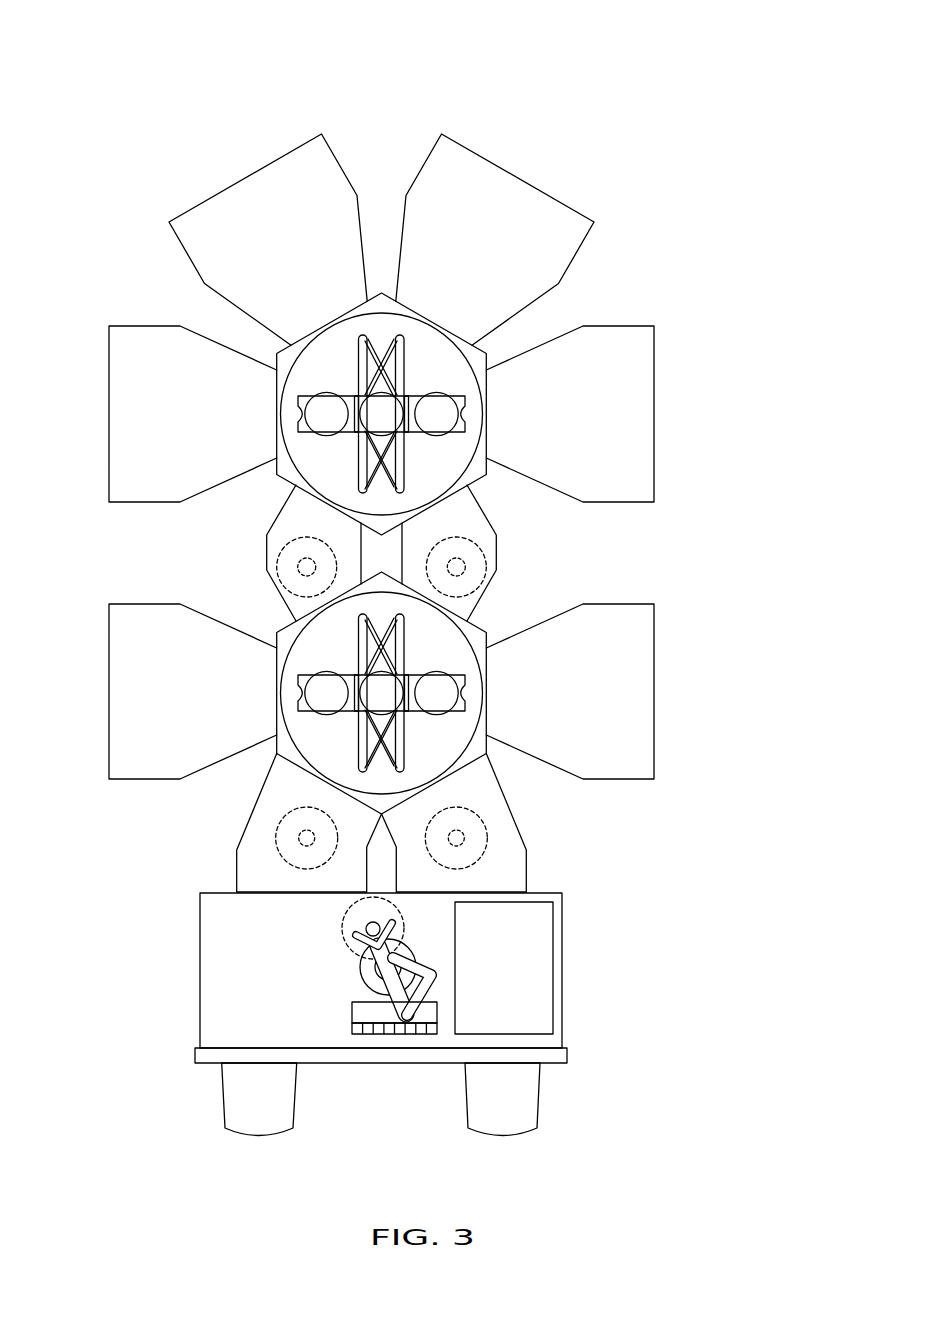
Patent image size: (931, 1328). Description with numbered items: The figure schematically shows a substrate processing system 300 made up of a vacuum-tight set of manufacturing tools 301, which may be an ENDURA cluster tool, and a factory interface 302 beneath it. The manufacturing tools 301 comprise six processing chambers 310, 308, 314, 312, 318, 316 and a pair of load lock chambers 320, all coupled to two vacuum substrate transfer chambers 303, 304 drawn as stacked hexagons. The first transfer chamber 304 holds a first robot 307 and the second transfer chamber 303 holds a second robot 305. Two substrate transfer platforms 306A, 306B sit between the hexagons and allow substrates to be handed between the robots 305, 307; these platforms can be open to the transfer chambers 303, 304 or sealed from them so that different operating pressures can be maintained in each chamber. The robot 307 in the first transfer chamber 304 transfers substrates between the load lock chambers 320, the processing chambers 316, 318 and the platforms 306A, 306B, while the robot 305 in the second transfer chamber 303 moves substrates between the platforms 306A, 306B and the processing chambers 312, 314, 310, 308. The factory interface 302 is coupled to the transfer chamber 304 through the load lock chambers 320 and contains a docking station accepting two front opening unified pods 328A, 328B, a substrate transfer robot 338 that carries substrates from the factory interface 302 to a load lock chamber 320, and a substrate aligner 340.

The substrate processing system 300 is at (627, 70).
The manufacturing tools 301 is at (736, 133).
The factory interface 302 is at (736, 853).
The second transfer chamber 303 is at (345, 372).
The first transfer chamber 304 is at (347, 650).
The second robot 305 is at (405, 448).
The substrate transfer platform 306A is at (472, 533).
The substrate transfer platform 306B is at (323, 533).
The first robot 307 is at (405, 727).
The processing chamber 308 is at (517, 175).
The processing chamber 310 is at (238, 178).
The processing chamber 312 is at (653, 433).
The processing chamber 314 is at (133, 326).
The processing chamber 316 is at (623, 604).
The processing chamber 318 is at (133, 604).
The load lock chamber 320 is at (251, 813).
The front opening unified pod 328A is at (278, 1107).
The front opening unified pod 328B is at (522, 1110).
The substrate transfer robot 338 is at (363, 1037).
The substrate aligner 340 is at (553, 932).